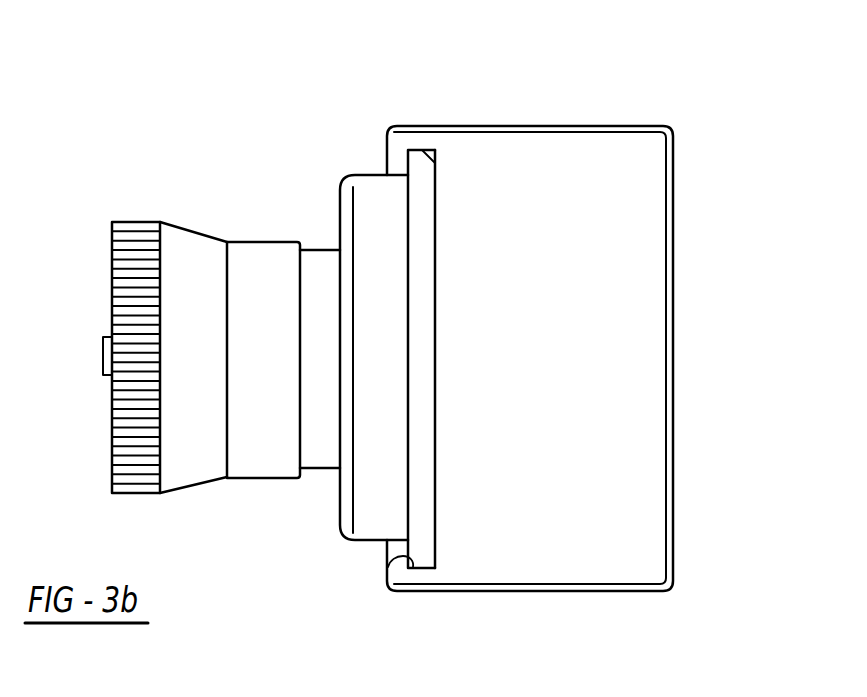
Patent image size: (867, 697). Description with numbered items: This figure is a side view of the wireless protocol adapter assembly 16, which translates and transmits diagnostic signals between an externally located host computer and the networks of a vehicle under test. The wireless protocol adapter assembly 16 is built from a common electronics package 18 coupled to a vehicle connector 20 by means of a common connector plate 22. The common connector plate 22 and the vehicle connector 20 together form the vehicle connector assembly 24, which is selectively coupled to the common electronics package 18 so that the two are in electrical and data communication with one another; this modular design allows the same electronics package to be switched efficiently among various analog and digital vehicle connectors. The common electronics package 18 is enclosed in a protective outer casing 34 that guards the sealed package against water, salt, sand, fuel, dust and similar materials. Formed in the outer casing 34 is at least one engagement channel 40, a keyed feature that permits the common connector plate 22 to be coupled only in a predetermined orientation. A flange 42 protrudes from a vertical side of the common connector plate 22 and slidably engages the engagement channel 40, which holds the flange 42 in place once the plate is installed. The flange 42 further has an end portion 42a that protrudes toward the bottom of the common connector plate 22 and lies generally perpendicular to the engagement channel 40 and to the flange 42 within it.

The wireless protocol adapter assembly 16 is at (703, 139).
The common electronics package 18 is at (528, 593).
The vehicle connector 20 is at (217, 480).
The common connector plate 22 is at (373, 542).
The vehicle connector assembly 24 is at (323, 149).
The outer casing 34 is at (672, 503).
The engagement channel 40 is at (427, 153).
The flange 42 is at (425, 568).
The end portion 42a is at (435, 500).